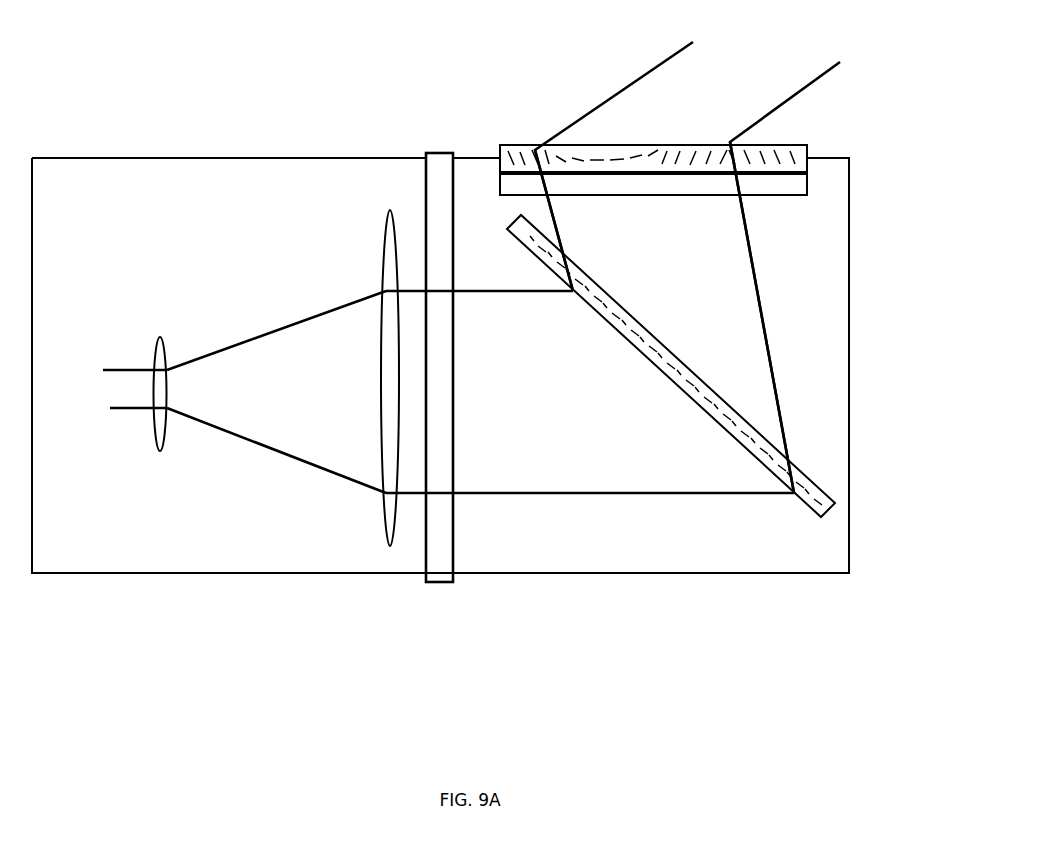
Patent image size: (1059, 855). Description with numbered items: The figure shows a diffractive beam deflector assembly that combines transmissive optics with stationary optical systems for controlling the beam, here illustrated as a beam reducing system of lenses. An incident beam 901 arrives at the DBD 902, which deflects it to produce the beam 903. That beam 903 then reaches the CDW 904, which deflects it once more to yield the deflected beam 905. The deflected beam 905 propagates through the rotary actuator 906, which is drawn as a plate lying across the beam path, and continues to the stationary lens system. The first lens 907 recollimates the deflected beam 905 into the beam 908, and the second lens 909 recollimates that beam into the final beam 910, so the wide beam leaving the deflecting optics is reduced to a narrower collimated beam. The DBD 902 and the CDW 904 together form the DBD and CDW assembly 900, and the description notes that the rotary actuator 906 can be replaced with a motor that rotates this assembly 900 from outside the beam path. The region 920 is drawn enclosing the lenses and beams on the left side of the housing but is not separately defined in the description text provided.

The DBD and CDW assembly 900 is at (742, 555).
The incident beam 901 is at (833, 62).
The DBD 902 is at (772, 150).
The beam 903 is at (553, 223).
The CDW 904 is at (728, 432).
The deflected beam 905 is at (500, 295).
The rotary actuator 906 is at (440, 157).
The lens 907 is at (388, 257).
The beam 908 is at (287, 328).
The lens 909 is at (162, 443).
The beam 910 is at (113, 388).
The light source module 920 is at (145, 563).